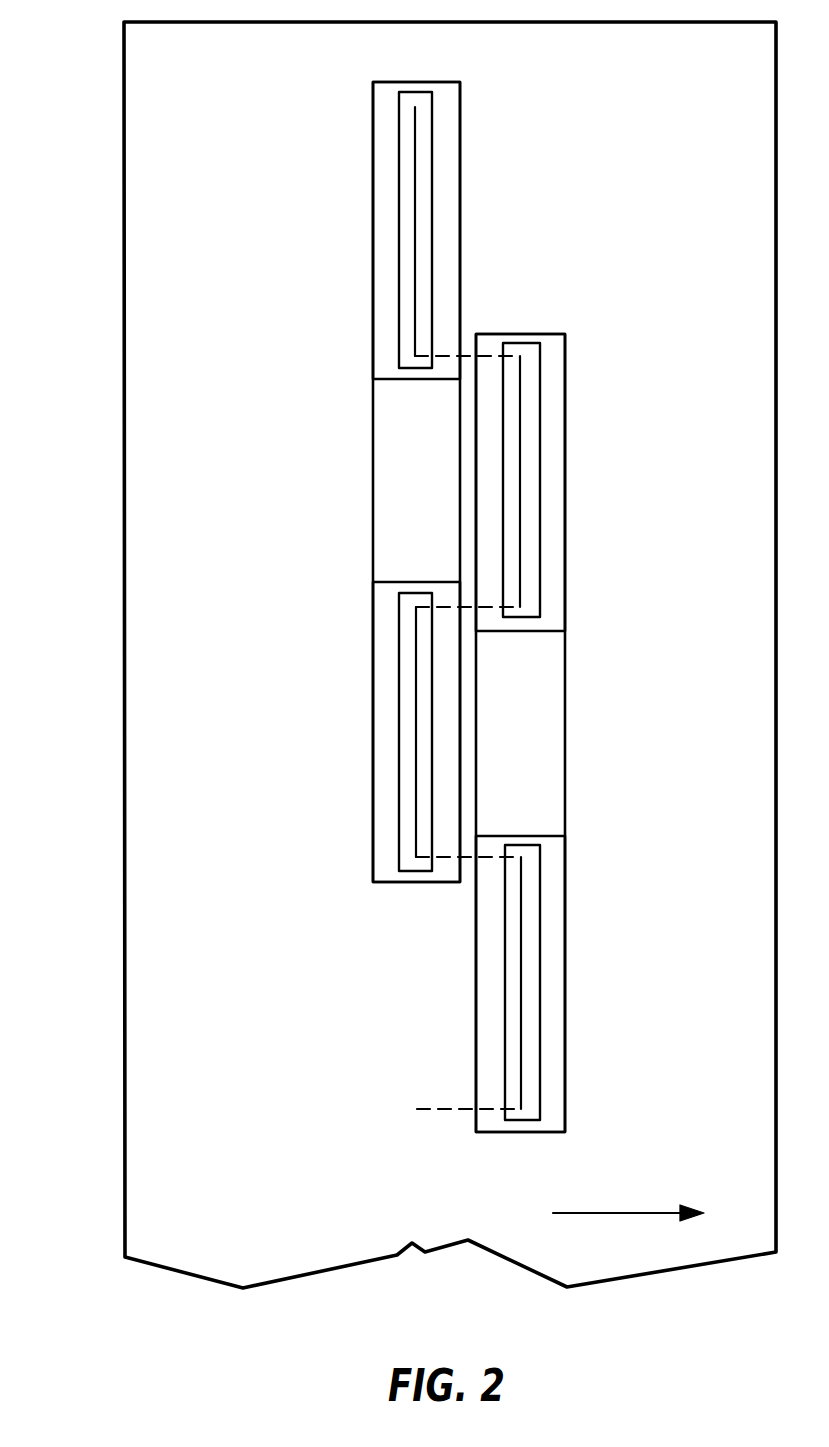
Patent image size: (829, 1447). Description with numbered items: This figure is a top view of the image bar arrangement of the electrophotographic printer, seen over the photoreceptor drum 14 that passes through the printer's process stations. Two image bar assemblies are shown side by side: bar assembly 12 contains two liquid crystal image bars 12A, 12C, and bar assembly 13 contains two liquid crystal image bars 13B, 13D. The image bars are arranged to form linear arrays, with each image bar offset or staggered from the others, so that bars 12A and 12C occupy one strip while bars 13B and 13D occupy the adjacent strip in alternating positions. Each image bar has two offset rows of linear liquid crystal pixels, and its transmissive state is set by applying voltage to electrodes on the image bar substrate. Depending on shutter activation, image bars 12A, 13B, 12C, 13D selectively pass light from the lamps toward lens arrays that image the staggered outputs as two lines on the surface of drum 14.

The bar assembly 12 is at (373, 477).
The liquid crystal image bar 12A is at (453, 167).
The liquid crystal image bar 12C is at (387, 748).
The bar assembly 13 is at (566, 735).
The liquid crystal image bar 13B is at (554, 468).
The liquid crystal image bar 13D is at (560, 1046).
The photoreceptor drum 14 is at (138, 485).